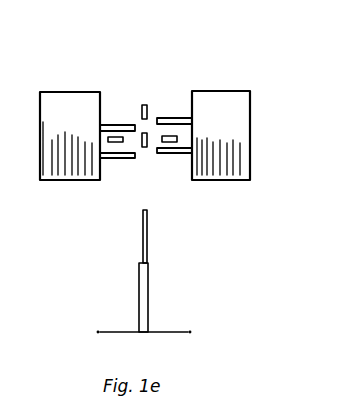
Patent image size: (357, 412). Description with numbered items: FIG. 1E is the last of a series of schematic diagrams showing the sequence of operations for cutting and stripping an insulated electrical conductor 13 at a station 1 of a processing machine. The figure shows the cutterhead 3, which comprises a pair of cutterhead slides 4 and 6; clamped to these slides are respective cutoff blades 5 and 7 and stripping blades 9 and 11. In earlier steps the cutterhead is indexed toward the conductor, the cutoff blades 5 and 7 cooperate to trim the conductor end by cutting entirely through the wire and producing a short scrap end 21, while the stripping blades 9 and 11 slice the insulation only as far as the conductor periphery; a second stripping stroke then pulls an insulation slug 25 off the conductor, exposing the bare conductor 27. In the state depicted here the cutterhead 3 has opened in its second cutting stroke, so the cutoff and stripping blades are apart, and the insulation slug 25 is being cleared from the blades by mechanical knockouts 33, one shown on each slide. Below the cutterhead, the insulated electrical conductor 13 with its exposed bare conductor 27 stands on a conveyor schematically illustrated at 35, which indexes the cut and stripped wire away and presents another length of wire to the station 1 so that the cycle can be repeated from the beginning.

The station 1 is at (113, 194).
The cutterhead 3 is at (232, 58).
The cutterhead slide 4 is at (43, 114).
The cutoff blade 5 is at (118, 125).
The cutterhead slide 6 is at (237, 110).
The cutoff blade 7 is at (178, 118).
The stripping blade 9 is at (122, 159).
The stripping blade 11 is at (173, 153).
The insulated electrical conductor 13 is at (139, 277).
The scrap end 21 is at (147, 104).
The insulation slug 25 is at (147, 135).
The bare conductor 27 is at (143, 230).
The mechanical knockouts 33 is at (108, 140).
The conveyor 35 is at (115, 331).